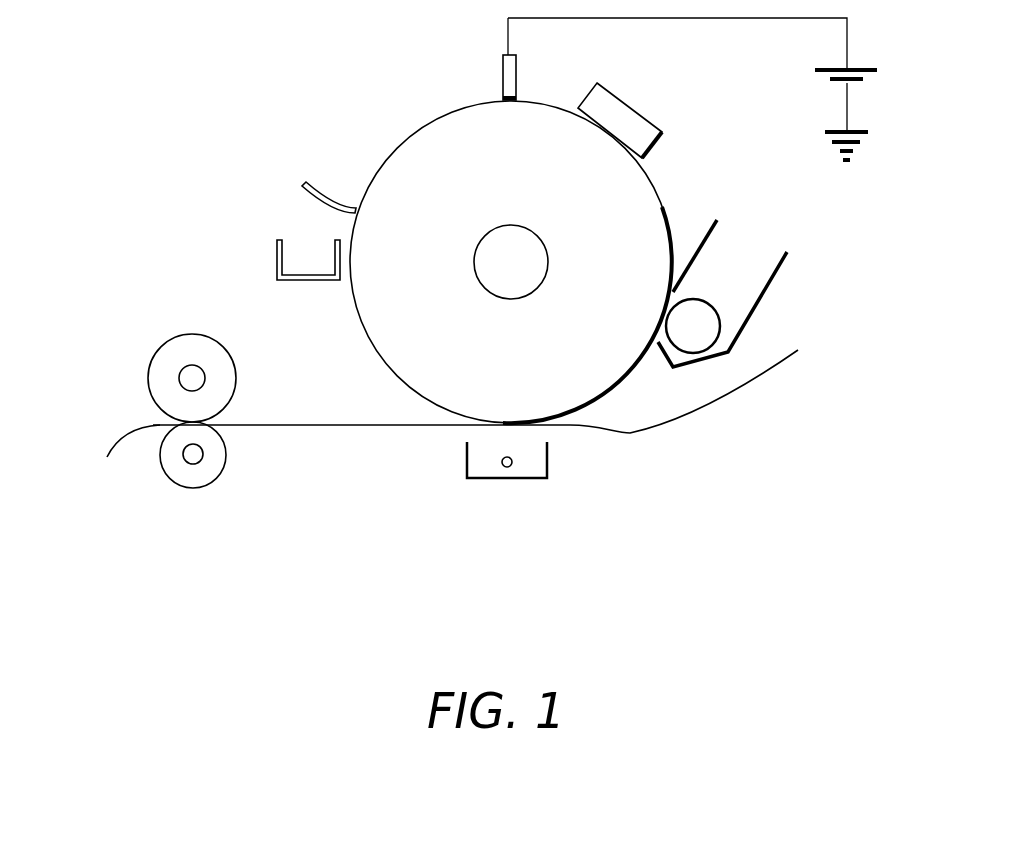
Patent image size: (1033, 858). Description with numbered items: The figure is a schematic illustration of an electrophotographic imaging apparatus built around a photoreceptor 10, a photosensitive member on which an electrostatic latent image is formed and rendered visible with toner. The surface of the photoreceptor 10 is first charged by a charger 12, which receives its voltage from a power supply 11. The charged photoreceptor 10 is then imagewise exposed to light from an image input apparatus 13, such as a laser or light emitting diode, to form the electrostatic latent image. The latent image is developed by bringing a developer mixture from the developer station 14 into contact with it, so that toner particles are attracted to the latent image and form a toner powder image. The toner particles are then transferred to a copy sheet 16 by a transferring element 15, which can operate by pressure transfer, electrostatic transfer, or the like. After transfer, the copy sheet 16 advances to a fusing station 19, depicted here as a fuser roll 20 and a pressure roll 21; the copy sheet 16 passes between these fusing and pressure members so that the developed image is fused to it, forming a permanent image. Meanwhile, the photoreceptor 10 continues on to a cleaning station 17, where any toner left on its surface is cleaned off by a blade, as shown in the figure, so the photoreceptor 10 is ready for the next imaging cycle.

The photoreceptor 10 is at (657, 190).
The power supply 11 is at (848, 57).
The charger 12 is at (508, 92).
The image input apparatus 13 is at (632, 112).
The developer station 14 is at (730, 266).
The transferring element 15 is at (548, 455).
The copy sheet 16 is at (740, 387).
The cleaning station 17 is at (291, 210).
The fusing station 19 is at (118, 400).
The fuser roll 20 is at (232, 367).
The pressure roll 21 is at (215, 458).